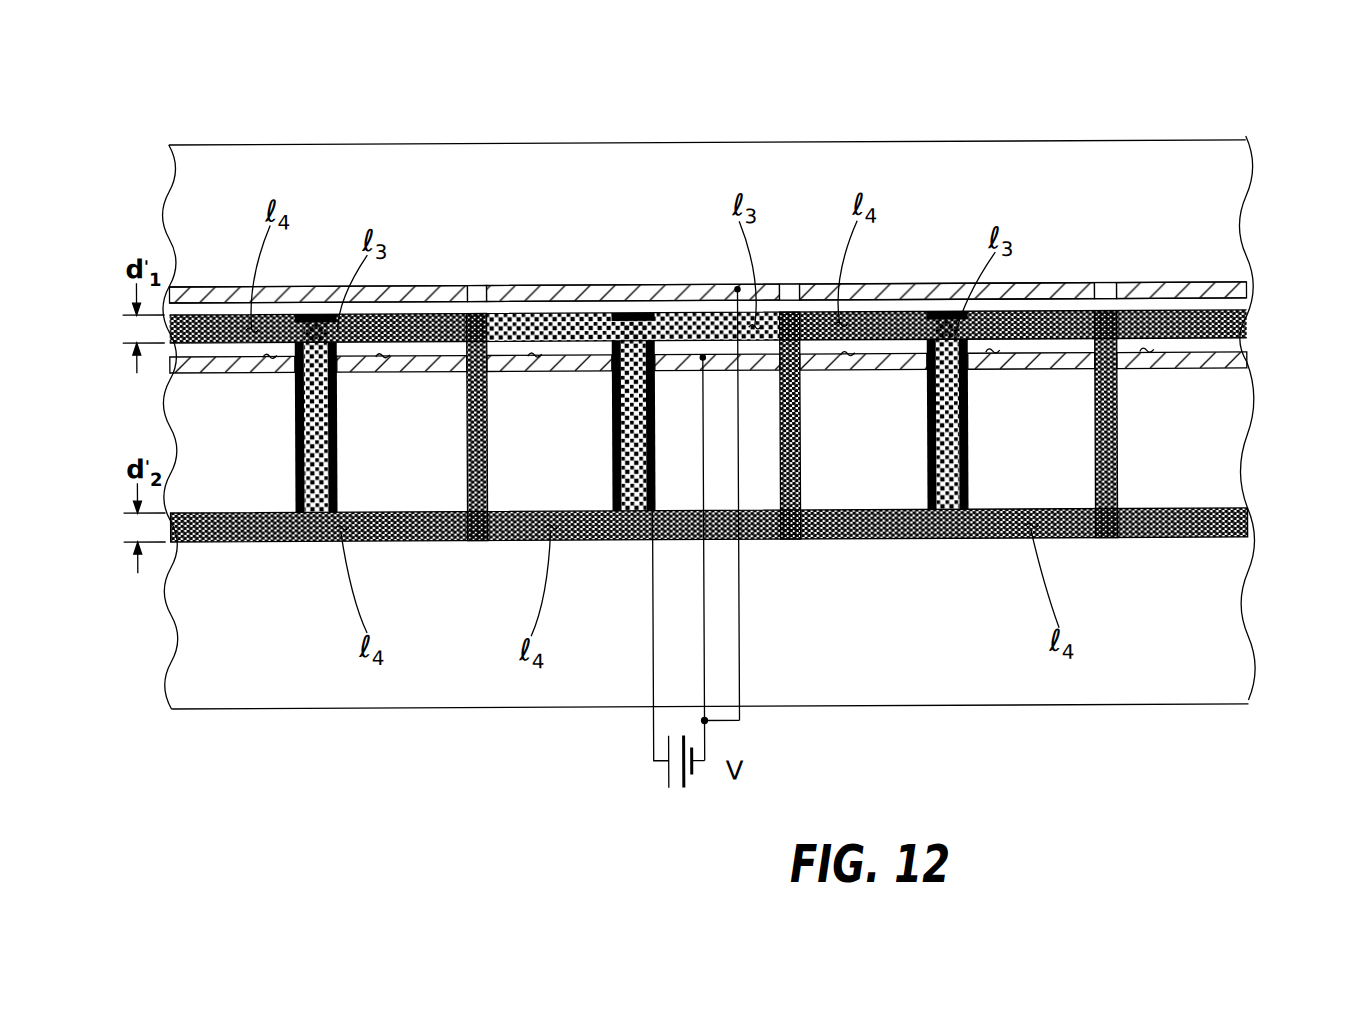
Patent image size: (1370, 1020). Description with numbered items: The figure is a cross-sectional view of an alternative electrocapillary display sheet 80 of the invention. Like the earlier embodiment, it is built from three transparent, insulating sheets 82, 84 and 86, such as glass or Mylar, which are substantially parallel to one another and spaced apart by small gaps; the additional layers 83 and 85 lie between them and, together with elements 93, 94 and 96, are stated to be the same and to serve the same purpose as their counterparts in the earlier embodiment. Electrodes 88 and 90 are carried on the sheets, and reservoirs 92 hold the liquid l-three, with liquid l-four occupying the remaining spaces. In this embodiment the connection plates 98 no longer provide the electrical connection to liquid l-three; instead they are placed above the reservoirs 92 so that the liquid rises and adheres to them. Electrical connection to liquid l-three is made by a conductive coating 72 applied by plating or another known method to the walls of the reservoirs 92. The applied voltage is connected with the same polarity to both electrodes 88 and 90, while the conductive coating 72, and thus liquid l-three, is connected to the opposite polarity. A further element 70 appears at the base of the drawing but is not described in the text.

The substrate base line 70 is at (336, 711).
The conductive coating 72 is at (298, 503).
The electrocapillary display sheet 80 is at (1152, 70).
The transparent insulating sheet 82 is at (1228, 188).
The display sheet element 83 is at (1262, 327).
The transparent insulating sheet 84 is at (1228, 430).
The display sheet element 85 is at (1262, 521).
The transparent insulating sheet 86 is at (1230, 618).
The electrode 88 is at (183, 287).
The electrode 90 is at (235, 374).
The reservoir 92 is at (316, 508).
The display sheet element 93 is at (477, 510).
The display sheet element 94 is at (487, 305).
The display sheet element 96 is at (270, 360).
The connection plate 98 is at (316, 316).